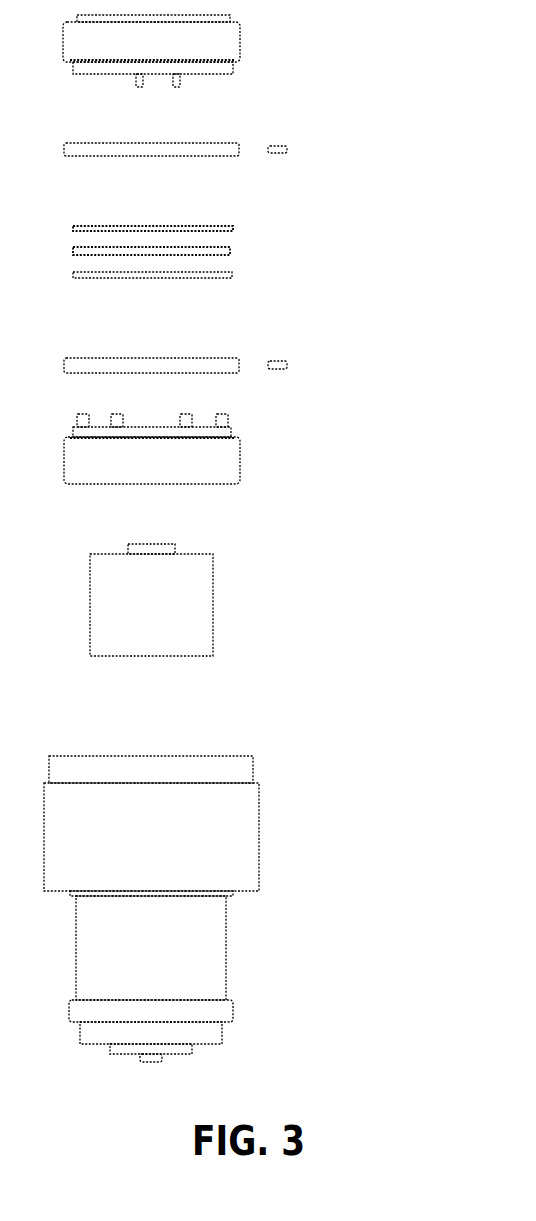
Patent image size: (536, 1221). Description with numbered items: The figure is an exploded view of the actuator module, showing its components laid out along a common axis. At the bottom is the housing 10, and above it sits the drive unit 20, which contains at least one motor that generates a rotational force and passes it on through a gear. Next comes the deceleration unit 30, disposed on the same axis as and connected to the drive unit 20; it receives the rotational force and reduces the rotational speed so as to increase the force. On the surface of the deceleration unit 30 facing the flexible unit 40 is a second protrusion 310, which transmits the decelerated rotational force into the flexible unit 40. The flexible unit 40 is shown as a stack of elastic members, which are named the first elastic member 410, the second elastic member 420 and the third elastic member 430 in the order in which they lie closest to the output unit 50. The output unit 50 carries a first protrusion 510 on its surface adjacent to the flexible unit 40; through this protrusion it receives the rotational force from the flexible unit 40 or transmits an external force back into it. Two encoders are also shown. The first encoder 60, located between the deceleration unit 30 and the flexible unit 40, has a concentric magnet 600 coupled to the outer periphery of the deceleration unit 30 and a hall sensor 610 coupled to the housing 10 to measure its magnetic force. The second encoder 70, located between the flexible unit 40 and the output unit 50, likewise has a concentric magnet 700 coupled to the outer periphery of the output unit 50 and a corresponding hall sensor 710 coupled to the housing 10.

The housing 10 is at (259, 836).
The drive unit 20 is at (213, 592).
The deceleration unit 30 is at (240, 462).
The second protrusion 310 is at (228, 418).
The flexible unit 40 is at (216, 255).
The first elastic member 410 is at (233, 230).
The second elastic member 420 is at (230, 251).
The third elastic member 430 is at (188, 282).
The output unit 50 is at (240, 40).
The first protrusion 510 is at (180, 78).
The first encoder 60 is at (254, 334).
The magnet 600 is at (222, 358).
The hall sensor 610 is at (283, 361).
The second encoder 70 is at (254, 159).
The magnet 700 is at (215, 156).
The hall sensor 710 is at (287, 148).